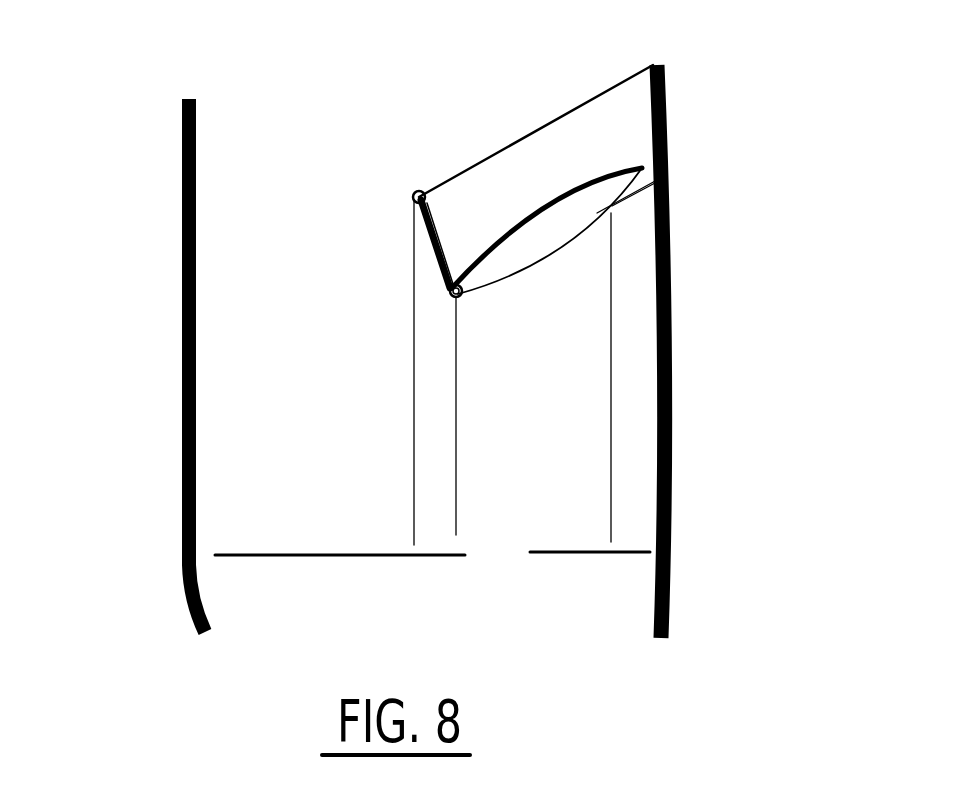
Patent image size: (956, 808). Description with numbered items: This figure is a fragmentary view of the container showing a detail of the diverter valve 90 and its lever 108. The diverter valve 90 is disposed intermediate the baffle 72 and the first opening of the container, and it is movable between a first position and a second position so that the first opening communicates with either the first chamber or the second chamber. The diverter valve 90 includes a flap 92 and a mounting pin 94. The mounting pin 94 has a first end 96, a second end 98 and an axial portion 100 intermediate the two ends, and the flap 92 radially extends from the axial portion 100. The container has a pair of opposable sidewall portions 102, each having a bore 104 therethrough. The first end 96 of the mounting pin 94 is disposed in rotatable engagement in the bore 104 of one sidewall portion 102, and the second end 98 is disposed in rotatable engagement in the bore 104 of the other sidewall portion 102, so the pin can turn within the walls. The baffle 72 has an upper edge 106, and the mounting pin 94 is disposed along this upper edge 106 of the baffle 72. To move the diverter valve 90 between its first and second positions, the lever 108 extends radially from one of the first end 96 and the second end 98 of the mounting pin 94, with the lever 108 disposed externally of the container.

The baffle 72 is at (435, 410).
The diverter valve 90 is at (480, 127).
The flap 92 is at (607, 130).
The mounting pin 94 is at (430, 243).
The first end 96 is at (447, 288).
The second end 98 is at (413, 217).
The axial portion 100 is at (448, 240).
The sidewall portions 102 is at (182, 284).
The bore 104 is at (413, 193).
The upper edge 106 is at (430, 262).
The lever 108 is at (535, 233).